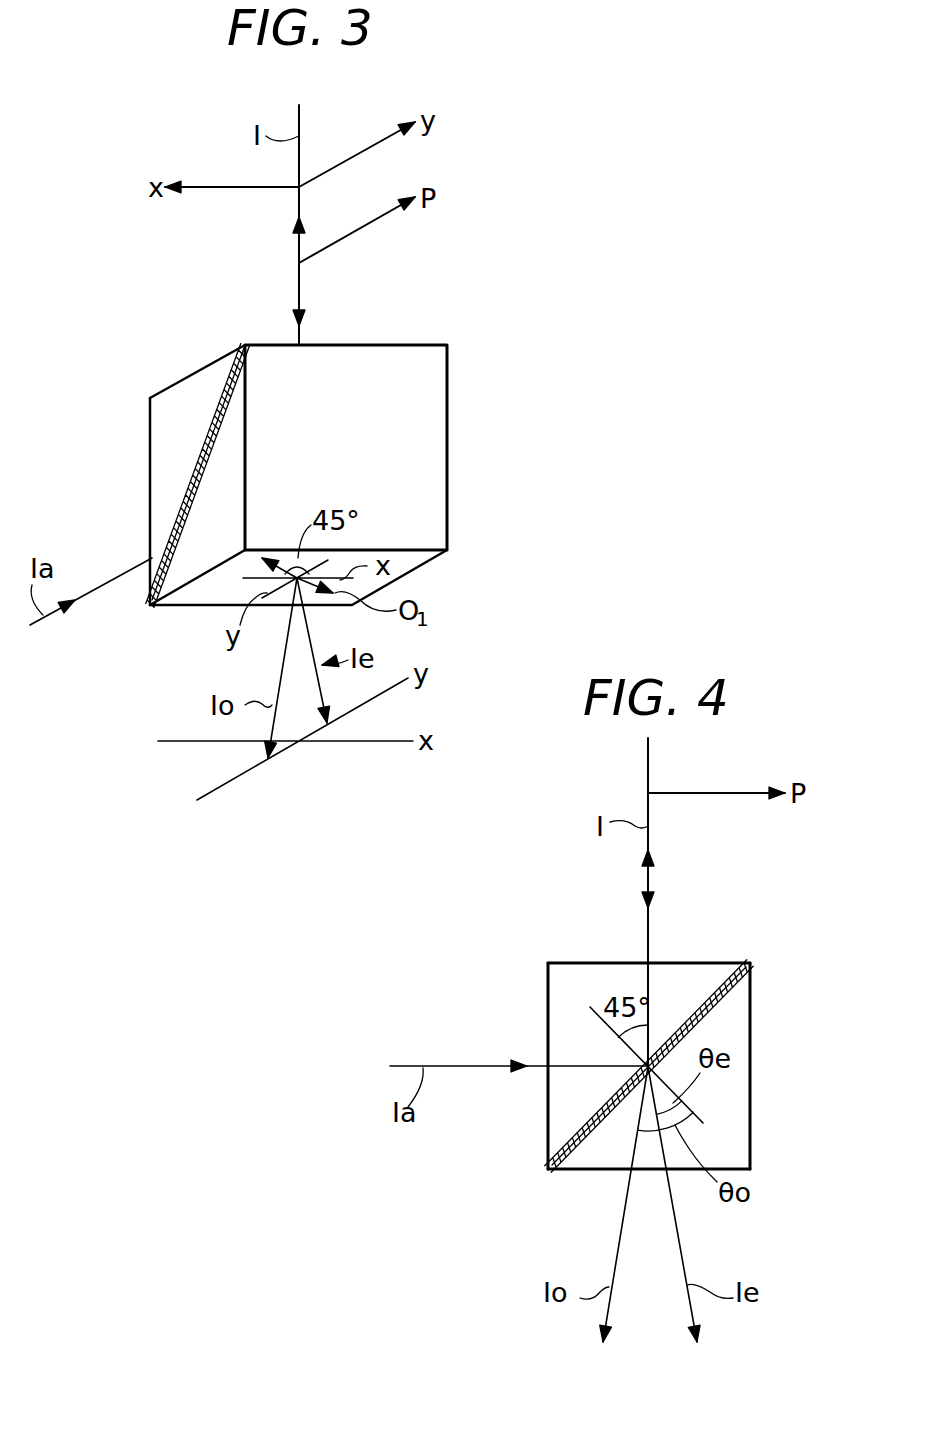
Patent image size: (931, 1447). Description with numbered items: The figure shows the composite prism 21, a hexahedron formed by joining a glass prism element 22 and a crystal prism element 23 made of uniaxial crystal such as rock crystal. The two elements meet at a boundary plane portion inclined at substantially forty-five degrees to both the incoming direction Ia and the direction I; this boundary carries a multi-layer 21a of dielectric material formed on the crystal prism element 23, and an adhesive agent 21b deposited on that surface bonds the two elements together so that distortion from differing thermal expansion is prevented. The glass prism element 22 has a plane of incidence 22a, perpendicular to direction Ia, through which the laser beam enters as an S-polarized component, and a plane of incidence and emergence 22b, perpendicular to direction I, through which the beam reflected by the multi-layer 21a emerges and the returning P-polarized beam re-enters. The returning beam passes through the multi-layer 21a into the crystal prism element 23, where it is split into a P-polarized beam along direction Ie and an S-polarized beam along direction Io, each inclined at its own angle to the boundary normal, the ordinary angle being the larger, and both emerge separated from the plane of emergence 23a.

In FIG. 3, the composite prism 21 is at (308, 477).
In FIG. 4, the composite prism 21 is at (633, 1077).
In FIG. 3, the multi-layer of dielectric material 21a is at (223, 380).
In FIG. 4, the multi-layer of dielectric material 21a is at (698, 978).
In FIG. 3, the adhesive agent 21b is at (204, 457).
In FIG. 4, the adhesive agent 21b is at (735, 980).
In FIG. 3, the glass prism element 22 is at (188, 452).
In FIG. 4, the glass prism element 22 is at (607, 1031).
In FIG. 3, the plane of incidence 22a is at (160, 505).
In FIG. 4, the plane of incidence 22a is at (548, 1115).
In FIG. 3, the plane of incidence and emergence 22b is at (197, 382).
In FIG. 4, the plane of incidence and emergence 22b is at (590, 963).
In FIG. 3, the crystal prism element 23 is at (438, 498).
In FIG. 4, the crystal prism element 23 is at (593, 1157).
In FIG. 3, the plane of emergence 23a is at (187, 602).
In FIG. 4, the plane of emergence 23a is at (696, 1165).